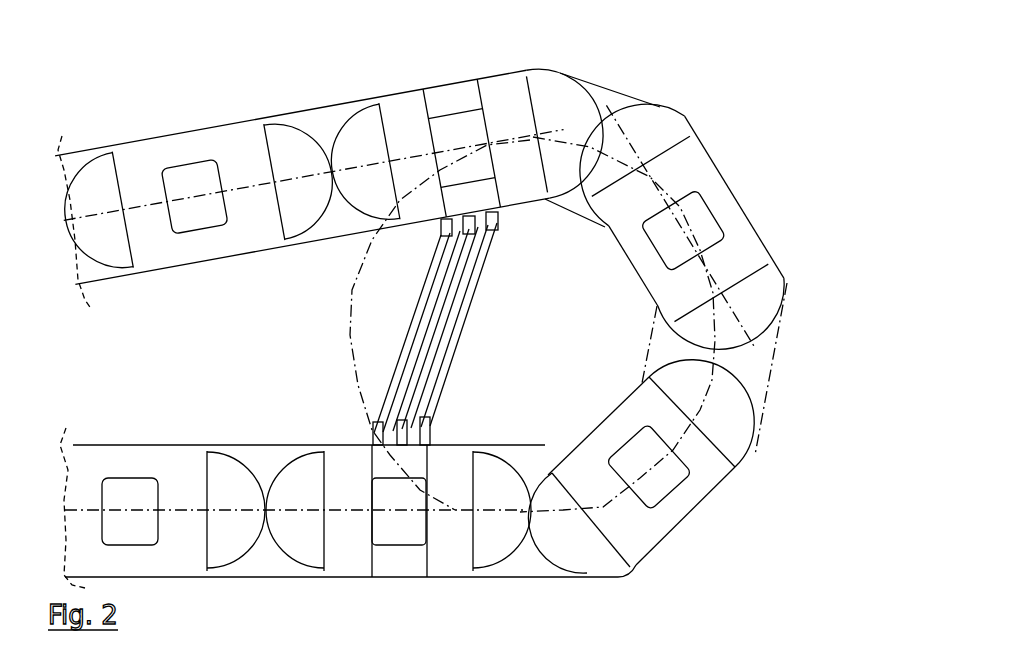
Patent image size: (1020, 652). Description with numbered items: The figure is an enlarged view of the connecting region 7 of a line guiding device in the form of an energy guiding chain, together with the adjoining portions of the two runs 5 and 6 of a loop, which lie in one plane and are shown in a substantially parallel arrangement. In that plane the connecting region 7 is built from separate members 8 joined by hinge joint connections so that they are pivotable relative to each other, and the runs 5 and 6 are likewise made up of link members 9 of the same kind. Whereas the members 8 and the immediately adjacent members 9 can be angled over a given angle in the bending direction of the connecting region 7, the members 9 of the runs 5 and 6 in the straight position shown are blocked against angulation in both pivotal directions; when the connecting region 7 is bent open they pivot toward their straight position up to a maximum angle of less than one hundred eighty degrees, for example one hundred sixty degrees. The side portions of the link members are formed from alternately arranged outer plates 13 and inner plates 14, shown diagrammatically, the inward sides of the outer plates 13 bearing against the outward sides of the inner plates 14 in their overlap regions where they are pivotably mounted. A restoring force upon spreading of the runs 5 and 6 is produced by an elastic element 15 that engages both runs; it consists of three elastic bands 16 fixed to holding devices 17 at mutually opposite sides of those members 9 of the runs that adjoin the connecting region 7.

The run 5 is at (120, 420).
The run 6 is at (259, 274).
The connecting region 7 is at (803, 325).
The members 8 is at (613, 90).
The members 9 is at (151, 130).
The outer plates 13 is at (207, 158).
The inner plates 14 is at (330, 118).
The elastic element 15 is at (407, 307).
The elastic bands 16 is at (445, 372).
The holding devices 17 is at (492, 220).